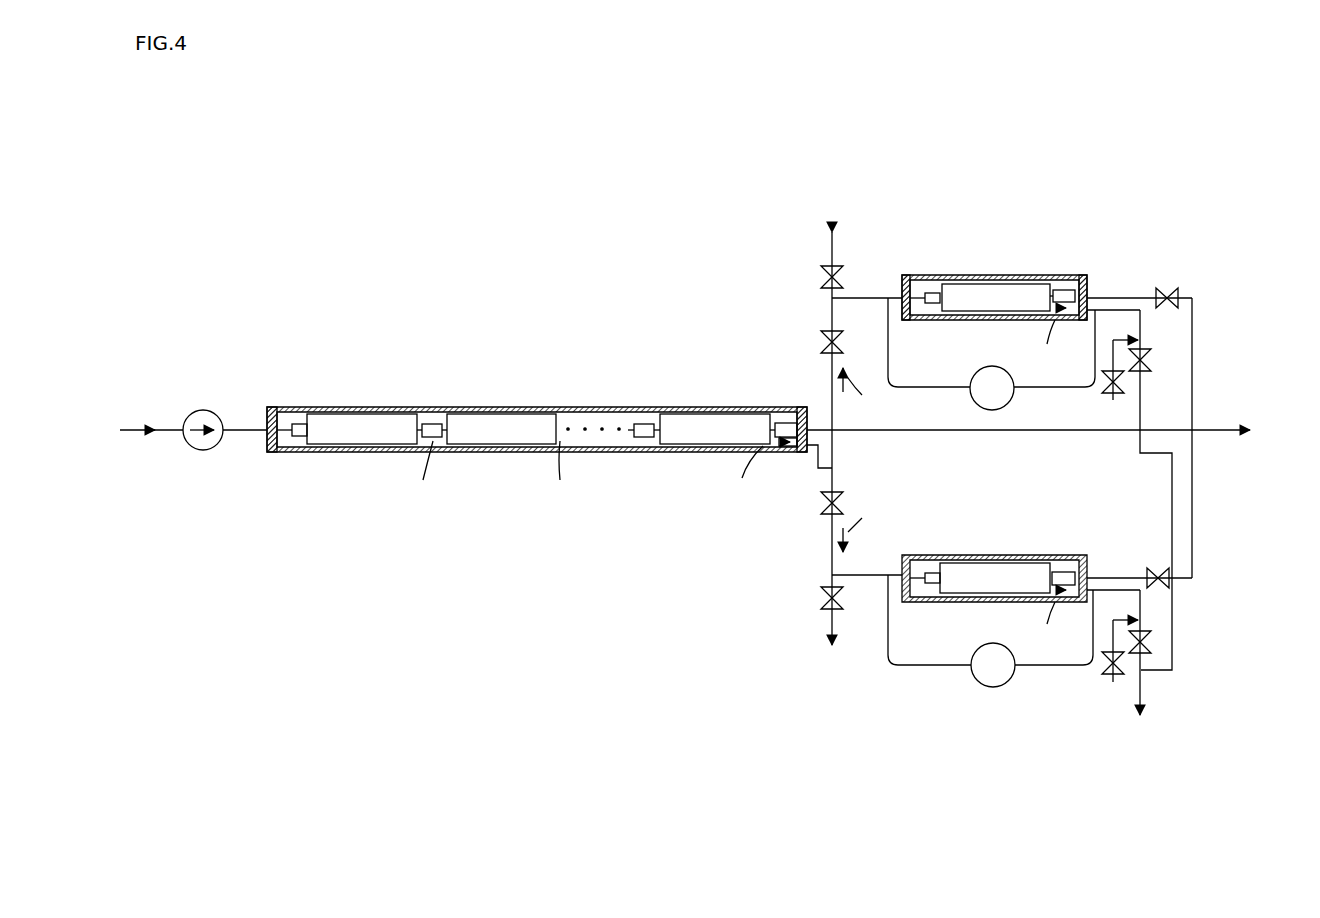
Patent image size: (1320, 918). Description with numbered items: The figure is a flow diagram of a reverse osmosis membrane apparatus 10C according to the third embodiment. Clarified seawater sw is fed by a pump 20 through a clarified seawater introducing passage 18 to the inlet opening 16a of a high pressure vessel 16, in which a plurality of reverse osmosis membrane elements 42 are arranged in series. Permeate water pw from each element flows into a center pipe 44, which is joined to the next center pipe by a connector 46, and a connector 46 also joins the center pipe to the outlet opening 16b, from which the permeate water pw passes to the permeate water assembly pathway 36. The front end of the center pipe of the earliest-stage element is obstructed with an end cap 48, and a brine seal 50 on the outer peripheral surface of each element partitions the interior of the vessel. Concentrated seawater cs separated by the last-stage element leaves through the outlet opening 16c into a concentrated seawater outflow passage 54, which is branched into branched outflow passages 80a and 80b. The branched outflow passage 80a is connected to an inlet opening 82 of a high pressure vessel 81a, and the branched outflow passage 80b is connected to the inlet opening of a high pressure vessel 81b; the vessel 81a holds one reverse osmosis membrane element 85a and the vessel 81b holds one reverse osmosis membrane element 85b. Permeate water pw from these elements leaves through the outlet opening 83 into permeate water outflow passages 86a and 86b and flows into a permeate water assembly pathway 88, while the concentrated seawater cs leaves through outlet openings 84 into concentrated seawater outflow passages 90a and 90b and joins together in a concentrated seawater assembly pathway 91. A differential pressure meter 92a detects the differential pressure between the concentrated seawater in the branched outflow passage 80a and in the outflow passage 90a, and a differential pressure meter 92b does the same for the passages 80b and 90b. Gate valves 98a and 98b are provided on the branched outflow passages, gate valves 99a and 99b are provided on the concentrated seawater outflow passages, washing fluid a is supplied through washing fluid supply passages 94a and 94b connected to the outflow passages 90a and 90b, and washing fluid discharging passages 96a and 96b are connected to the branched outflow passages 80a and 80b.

The reverse osmosis membrane apparatus 10C is at (648, 222).
The high pressure vessel 16 is at (471, 407).
The inlet opening 16a is at (281, 430).
The outlet opening 16b is at (803, 418).
The outlet opening 16c is at (796, 447).
The clarified seawater introducing passage 18 is at (239, 428).
The pump 20 is at (203, 410).
The permeate water assembly pathway 36 is at (922, 433).
The reverse osmosis membrane element 42 is at (374, 420).
The center pipe 44 is at (636, 424).
The connector 46 is at (650, 424).
The end cap 48 is at (296, 438).
The brine seal 50 is at (551, 413).
The concentrated seawater outflow passage 54 is at (815, 465).
The branched outflow passage 80a is at (826, 370).
The branched outflow passage 80b is at (826, 545).
The high pressure vessel 81a is at (990, 275).
The high pressure vessel 81b is at (990, 555).
The inlet opening 82 is at (904, 293).
The outlet opening 83 is at (1086, 298).
The outlet opening 84 is at (1070, 320).
The reverse osmosis membrane element 85a is at (962, 290).
The reverse osmosis membrane element 85b is at (962, 570).
The permeate water outflow passage 86a is at (1194, 342).
The permeate water outflow passage 86b is at (1194, 548).
The permeate water assembly pathway 88 is at (1219, 430).
The concentrated seawater outflow passage 90a is at (1174, 505).
The concentrated seawater outflow passage 90b is at (1143, 600).
The concentrated seawater assembly pathway 91 is at (1143, 686).
The differential pressure meter 92a is at (971, 378).
The differential pressure meter 92b is at (971, 657).
The washing fluid supply passage 94a is at (1105, 395).
The washing fluid supply passage 94b is at (1105, 682).
The washing fluid discharging passage 96a is at (826, 247).
The washing fluid discharging passage 96b is at (826, 610).
The gate valve 98a is at (826, 338).
The gate valve 98b is at (826, 507).
The gate valve 99a is at (1150, 370).
The gate valve 99b is at (1152, 646).
The clarified seawater sw is at (151, 405).
The permeate water pw is at (1274, 426).
The concentrated seawater cs is at (781, 533).
The washing fluid a is at (1113, 557).